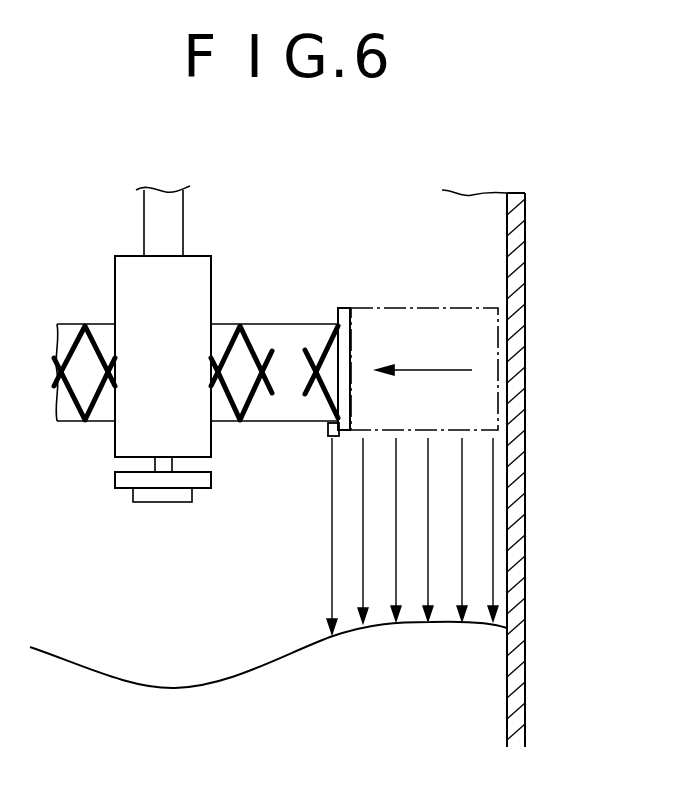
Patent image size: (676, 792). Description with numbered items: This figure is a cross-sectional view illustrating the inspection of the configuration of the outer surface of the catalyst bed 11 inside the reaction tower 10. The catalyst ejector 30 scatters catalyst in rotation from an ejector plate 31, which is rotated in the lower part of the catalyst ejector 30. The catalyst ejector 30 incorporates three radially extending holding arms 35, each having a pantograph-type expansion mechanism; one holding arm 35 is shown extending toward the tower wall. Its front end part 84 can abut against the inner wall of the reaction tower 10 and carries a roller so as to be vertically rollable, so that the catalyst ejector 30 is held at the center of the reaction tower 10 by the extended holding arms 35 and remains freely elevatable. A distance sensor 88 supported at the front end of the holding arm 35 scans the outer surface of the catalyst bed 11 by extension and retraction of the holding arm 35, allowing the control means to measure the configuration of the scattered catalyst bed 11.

The reaction tower 10 is at (525, 243).
The catalyst bed 11 is at (78, 660).
The catalyst ejector 30 is at (115, 275).
The ejector plate 31 is at (115, 477).
The holding arm 35 is at (240, 324).
The front end part 84 is at (344, 308).
The distance sensor 88 is at (328, 432).